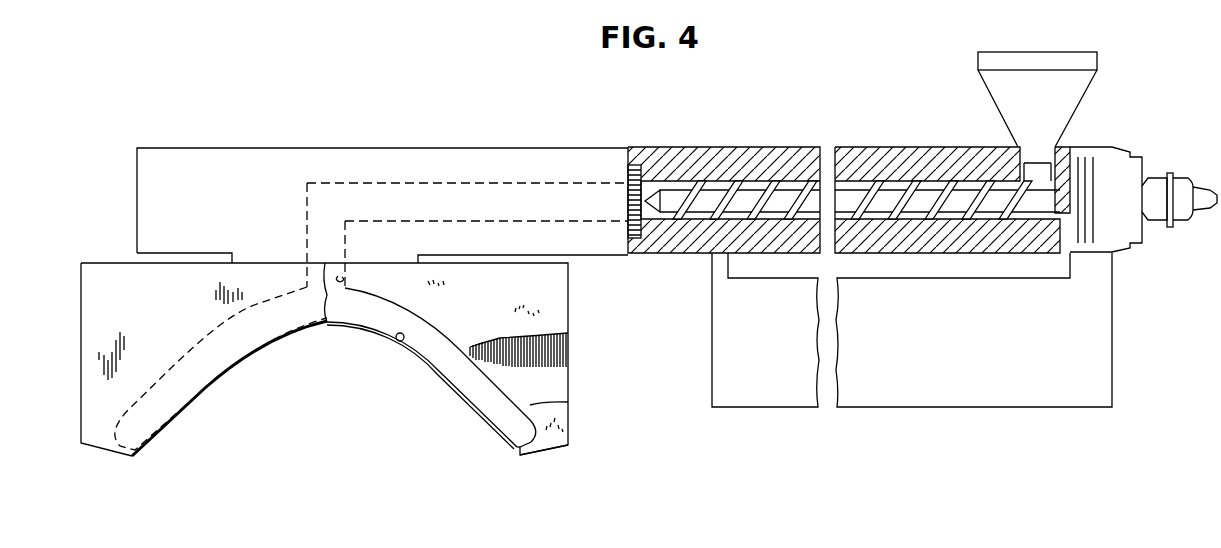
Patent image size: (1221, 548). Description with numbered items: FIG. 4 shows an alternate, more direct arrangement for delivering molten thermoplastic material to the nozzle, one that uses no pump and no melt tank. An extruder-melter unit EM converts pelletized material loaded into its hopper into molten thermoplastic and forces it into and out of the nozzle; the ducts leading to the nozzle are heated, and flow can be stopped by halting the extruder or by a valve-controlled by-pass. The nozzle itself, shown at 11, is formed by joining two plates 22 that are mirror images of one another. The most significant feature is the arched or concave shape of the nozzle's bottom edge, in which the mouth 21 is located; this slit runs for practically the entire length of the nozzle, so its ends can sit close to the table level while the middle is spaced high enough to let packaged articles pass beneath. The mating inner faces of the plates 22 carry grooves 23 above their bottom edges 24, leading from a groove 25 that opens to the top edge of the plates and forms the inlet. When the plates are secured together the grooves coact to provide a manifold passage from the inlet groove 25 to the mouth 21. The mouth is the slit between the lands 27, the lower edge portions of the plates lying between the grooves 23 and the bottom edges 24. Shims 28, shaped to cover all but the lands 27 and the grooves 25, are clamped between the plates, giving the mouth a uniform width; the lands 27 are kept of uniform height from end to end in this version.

The mold block 11 is at (128, 282).
The mouth of the nozzle 21 is at (340, 327).
The plates 22 is at (103, 408).
The grooves 23 is at (400, 341).
The bottom edges 24 is at (447, 388).
The groove 25 is at (342, 278).
The lands 27 is at (480, 413).
The shims 28 is at (550, 298).
The extruder-melter unit EM is at (893, 143).